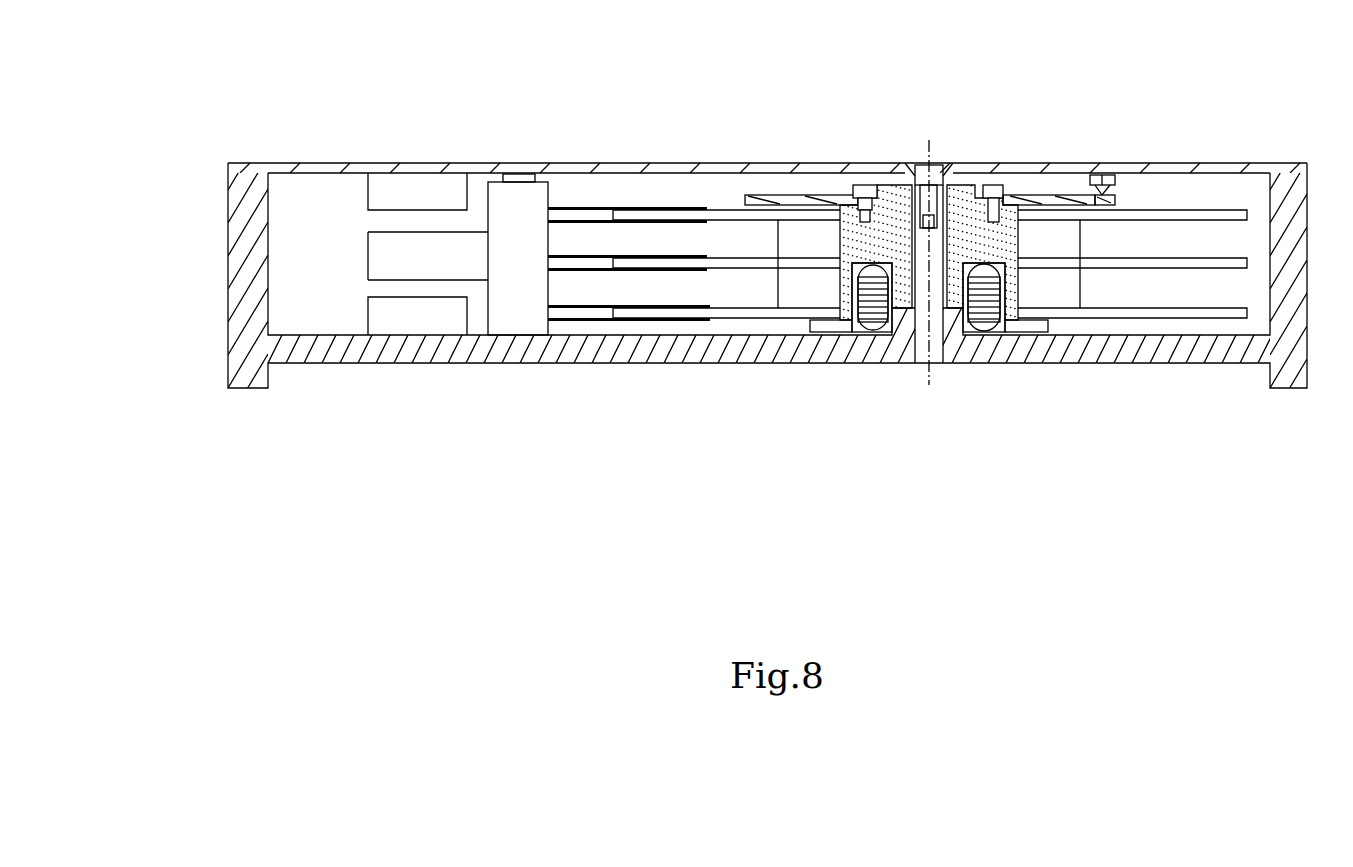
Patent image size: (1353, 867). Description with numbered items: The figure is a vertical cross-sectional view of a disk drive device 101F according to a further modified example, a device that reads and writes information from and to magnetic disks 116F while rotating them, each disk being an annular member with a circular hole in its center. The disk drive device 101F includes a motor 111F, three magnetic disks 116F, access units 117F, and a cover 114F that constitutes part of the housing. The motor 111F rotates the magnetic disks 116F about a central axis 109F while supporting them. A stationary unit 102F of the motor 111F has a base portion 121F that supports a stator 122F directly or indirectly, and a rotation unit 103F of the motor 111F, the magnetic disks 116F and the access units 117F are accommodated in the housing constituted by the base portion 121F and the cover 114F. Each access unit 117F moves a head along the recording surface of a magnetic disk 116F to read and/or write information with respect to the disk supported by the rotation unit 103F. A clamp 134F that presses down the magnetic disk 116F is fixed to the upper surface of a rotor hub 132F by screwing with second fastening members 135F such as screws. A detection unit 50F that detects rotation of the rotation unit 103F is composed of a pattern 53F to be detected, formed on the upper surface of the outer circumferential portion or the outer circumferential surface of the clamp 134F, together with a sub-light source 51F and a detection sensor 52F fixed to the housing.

The disk drive device 101F is at (562, 107).
The stationary unit 102F is at (776, 378).
The base portion 121F is at (654, 345).
The cover 114F is at (510, 176).
The access unit 117F is at (665, 205).
The clamp 134F is at (758, 196).
The motor 111F is at (827, 188).
The central axis 109F is at (918, 170).
The rotation unit 103F is at (1013, 190).
The second fastening member 135F is at (988, 186).
The stator 122F is at (980, 325).
The rotor hub 132F is at (1013, 300).
The magnetic disk 116F is at (1222, 212).
The pattern to be detected 53F is at (1103, 207).
The detection sensor 52F is at (1108, 174).
The sub-light source 51F is at (1094, 172).
The detection unit 50F is at (1120, 188).